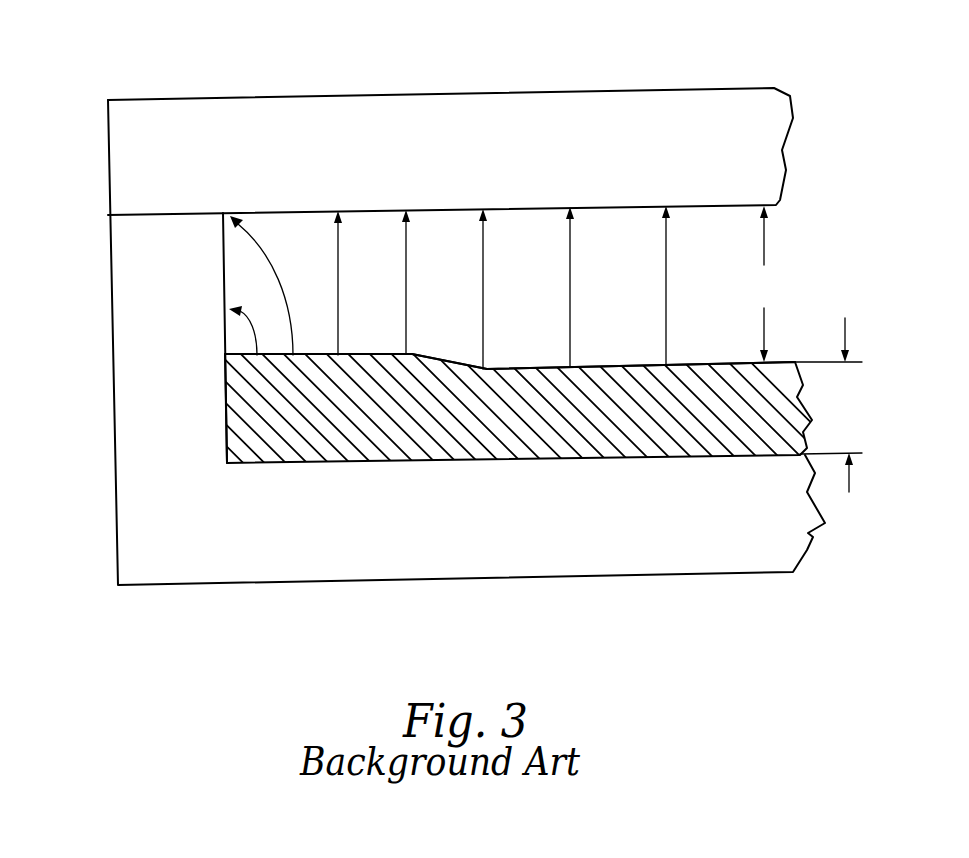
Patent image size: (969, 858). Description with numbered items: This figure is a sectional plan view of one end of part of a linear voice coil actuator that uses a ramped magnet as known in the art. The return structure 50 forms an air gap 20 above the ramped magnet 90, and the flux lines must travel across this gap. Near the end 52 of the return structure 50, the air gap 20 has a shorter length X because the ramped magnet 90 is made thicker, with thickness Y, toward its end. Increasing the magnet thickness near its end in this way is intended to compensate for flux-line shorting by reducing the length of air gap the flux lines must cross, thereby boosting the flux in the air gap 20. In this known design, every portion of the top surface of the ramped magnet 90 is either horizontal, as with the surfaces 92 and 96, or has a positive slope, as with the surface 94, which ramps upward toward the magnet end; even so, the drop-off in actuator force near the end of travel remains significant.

The air gap 20 is at (810, 240).
The return structure 50 is at (137, 118).
The end of return structure 52 is at (152, 422).
The ramped magnet 90 is at (752, 430).
The surface 92 is at (717, 350).
The surface 94 is at (433, 344).
The surface 96 is at (317, 348).